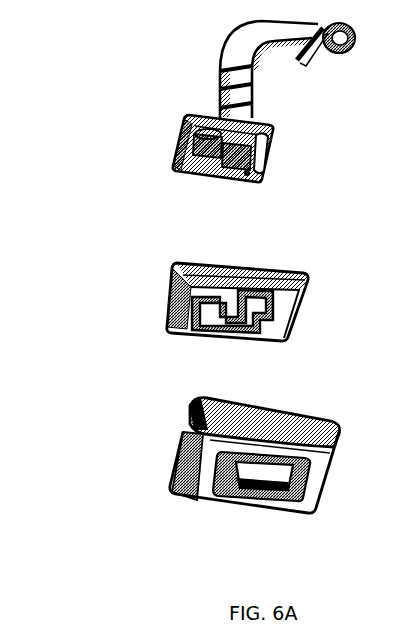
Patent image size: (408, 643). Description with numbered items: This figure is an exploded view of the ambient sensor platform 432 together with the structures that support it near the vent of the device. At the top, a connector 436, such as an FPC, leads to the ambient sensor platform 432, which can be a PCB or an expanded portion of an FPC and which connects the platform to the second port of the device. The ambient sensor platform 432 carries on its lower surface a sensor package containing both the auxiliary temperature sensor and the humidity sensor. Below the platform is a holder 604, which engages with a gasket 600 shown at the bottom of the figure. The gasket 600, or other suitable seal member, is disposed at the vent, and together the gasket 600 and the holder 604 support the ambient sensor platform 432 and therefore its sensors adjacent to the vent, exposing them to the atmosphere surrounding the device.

The connector 436 is at (243, 43).
The ambient sensor platform 432 is at (190, 133).
The holder 604 is at (174, 290).
The gasket 600 is at (175, 468).